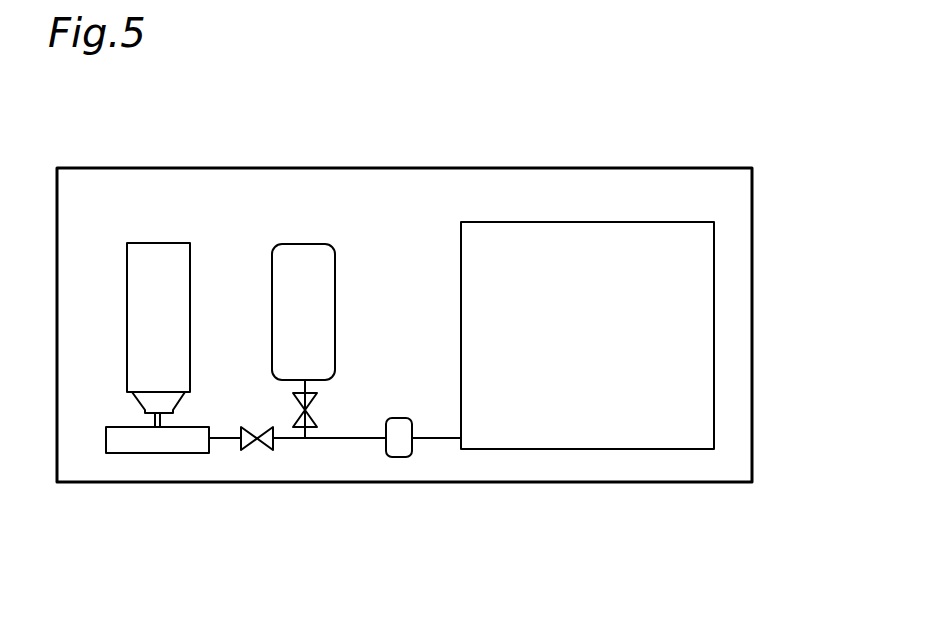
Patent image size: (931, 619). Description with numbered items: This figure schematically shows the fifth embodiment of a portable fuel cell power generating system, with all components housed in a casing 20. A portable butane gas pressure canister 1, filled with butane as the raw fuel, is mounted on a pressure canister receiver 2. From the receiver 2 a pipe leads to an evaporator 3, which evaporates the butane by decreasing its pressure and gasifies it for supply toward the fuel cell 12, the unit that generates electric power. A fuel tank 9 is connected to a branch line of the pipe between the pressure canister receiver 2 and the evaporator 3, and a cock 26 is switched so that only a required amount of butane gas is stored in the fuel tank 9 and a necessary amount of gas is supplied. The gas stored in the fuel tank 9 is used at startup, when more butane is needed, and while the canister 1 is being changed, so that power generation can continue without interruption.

The butane gas pressure canister 1 is at (158, 243).
The pressure canister receiver 2 is at (116, 453).
The evaporator 3 is at (400, 418).
The fuel tank 9 is at (306, 244).
The fuel cell 12 is at (461, 252).
The casing 20 is at (754, 281).
The cock 26 is at (297, 403).